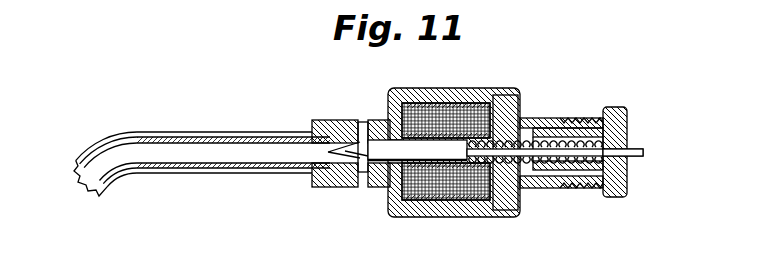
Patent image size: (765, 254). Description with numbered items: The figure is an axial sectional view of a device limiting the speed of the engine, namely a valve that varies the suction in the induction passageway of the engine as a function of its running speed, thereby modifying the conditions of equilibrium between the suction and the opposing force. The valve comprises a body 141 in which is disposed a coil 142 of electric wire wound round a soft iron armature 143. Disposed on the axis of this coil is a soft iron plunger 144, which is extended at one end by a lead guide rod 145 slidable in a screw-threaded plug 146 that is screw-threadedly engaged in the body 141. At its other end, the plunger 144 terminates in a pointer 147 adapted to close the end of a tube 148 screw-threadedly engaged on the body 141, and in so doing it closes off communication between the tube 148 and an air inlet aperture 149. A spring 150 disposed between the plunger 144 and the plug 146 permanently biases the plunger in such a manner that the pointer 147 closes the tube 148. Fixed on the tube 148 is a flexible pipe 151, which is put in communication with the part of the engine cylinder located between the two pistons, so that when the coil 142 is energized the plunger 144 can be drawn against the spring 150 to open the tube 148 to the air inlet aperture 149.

The body 141 is at (429, 92).
The coil 142 is at (476, 100).
The soft iron armature 143 is at (450, 201).
The soft iron plunger 144 is at (390, 184).
The lead guide rod 145 is at (572, 156).
The plug 146 is at (589, 125).
The pointer 147 is at (333, 180).
The tube 148 is at (318, 121).
The air inlet aperture 149 is at (363, 122).
The spring 150 is at (551, 141).
The flexible pipe 151 is at (105, 188).